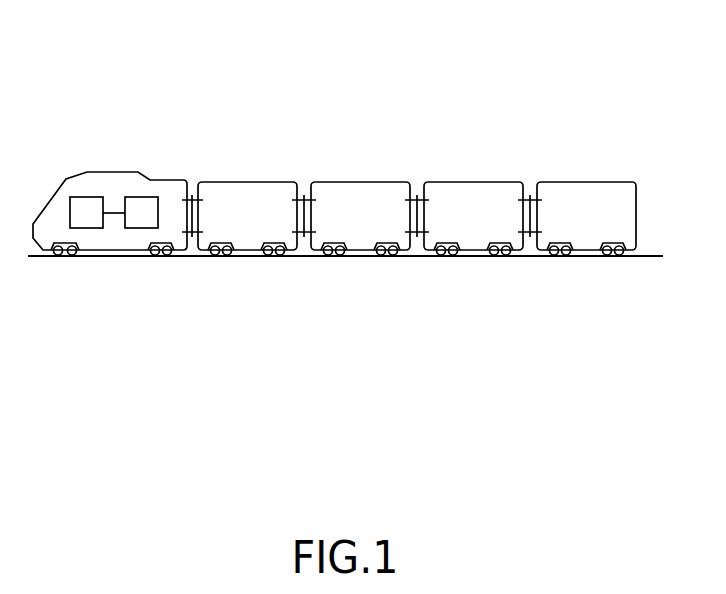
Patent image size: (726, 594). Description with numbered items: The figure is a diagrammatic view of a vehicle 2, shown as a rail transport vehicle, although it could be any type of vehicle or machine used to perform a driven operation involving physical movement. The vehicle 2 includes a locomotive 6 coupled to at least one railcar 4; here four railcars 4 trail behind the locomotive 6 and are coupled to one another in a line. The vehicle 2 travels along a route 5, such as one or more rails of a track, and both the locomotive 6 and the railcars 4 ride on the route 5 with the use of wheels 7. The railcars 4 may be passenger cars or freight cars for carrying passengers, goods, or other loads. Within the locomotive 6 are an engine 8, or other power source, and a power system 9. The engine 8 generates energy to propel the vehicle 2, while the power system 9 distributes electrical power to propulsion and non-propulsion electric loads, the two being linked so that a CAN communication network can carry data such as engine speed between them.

The vehicle 2 is at (535, 72).
The railcar 4 is at (248, 182).
The route 5 is at (655, 255).
The locomotive 6 is at (113, 172).
The wheels 7 is at (58, 255).
The engine 8 is at (86, 212).
The power system 9 is at (141, 212).